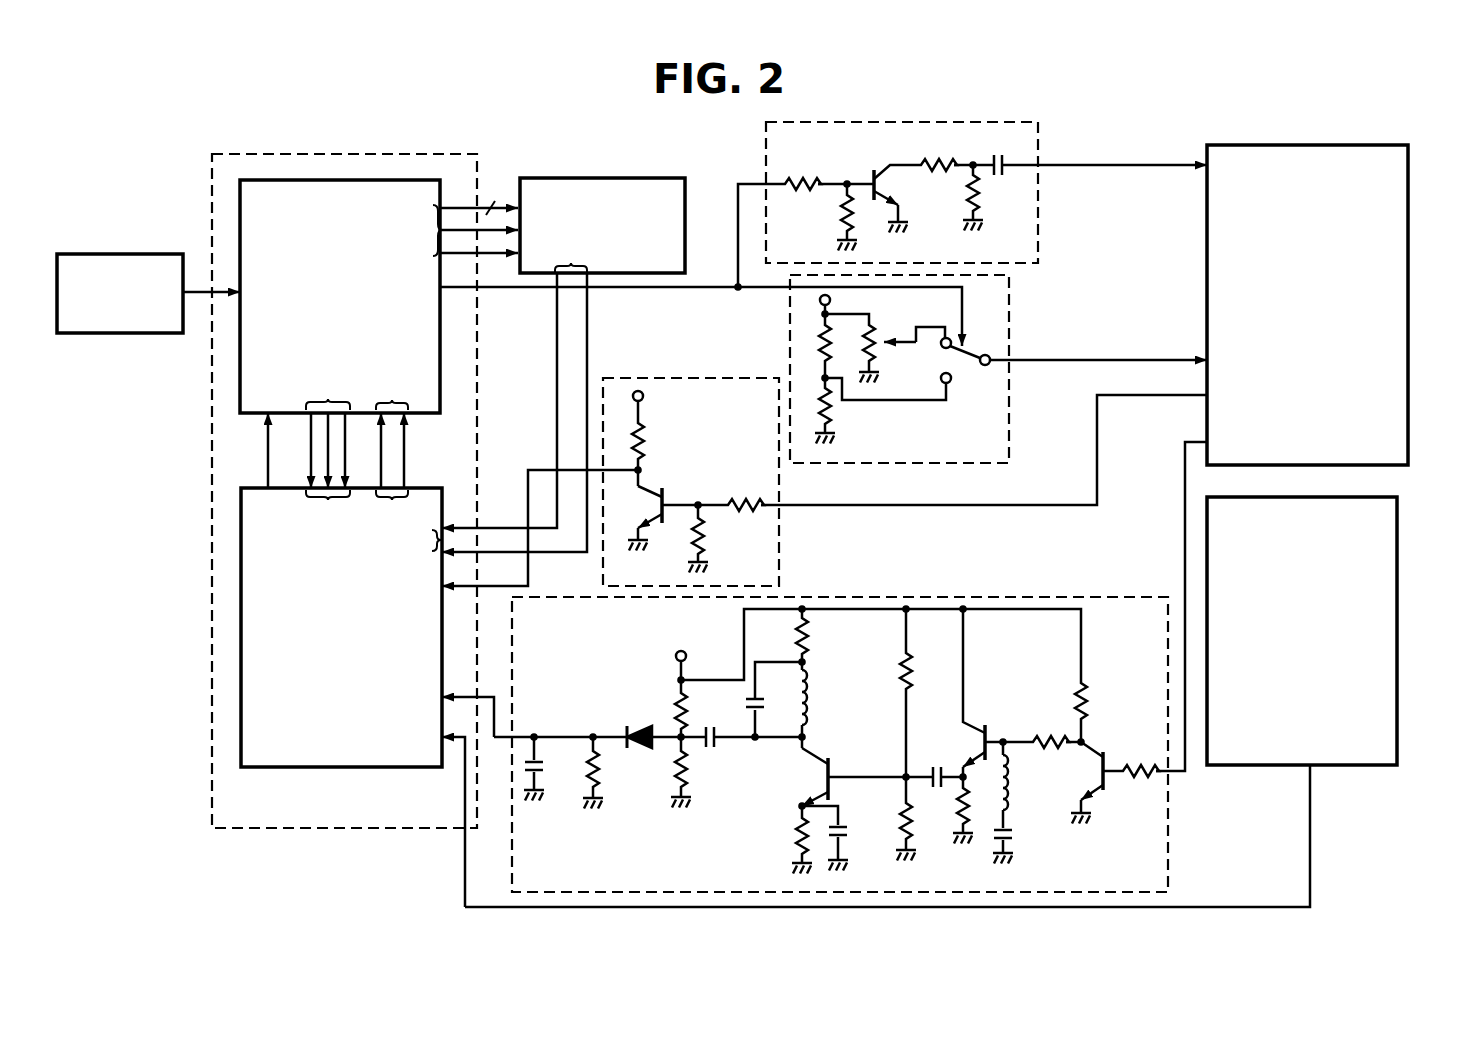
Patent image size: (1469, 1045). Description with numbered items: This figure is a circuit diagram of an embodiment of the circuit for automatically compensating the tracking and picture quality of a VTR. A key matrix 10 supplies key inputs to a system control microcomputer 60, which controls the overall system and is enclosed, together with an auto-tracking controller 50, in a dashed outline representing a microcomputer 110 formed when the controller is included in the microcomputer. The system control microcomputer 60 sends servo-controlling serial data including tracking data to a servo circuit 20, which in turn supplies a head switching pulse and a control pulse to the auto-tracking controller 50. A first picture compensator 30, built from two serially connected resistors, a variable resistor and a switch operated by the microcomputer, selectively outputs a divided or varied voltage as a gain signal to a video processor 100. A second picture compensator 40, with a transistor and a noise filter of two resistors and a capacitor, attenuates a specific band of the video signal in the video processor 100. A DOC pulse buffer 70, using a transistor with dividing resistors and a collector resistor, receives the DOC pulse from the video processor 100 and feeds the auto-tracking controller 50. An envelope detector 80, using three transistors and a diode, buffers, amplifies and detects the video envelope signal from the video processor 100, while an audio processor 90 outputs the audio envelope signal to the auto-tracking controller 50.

The key matrix 10 is at (122, 333).
The servo circuit 20 is at (685, 232).
The first picture compensator 30 is at (836, 463).
The second picture compensator 40 is at (1022, 263).
The auto-tracking controller 50 is at (405, 767).
The system control microcomputer 60 is at (256, 413).
The DOC pulse buffer 70 is at (779, 540).
The envelope detector 80 is at (1168, 843).
The audio processor 90 is at (1262, 765).
The video processor 100 is at (1408, 465).
The microcomputer 110 is at (405, 828).